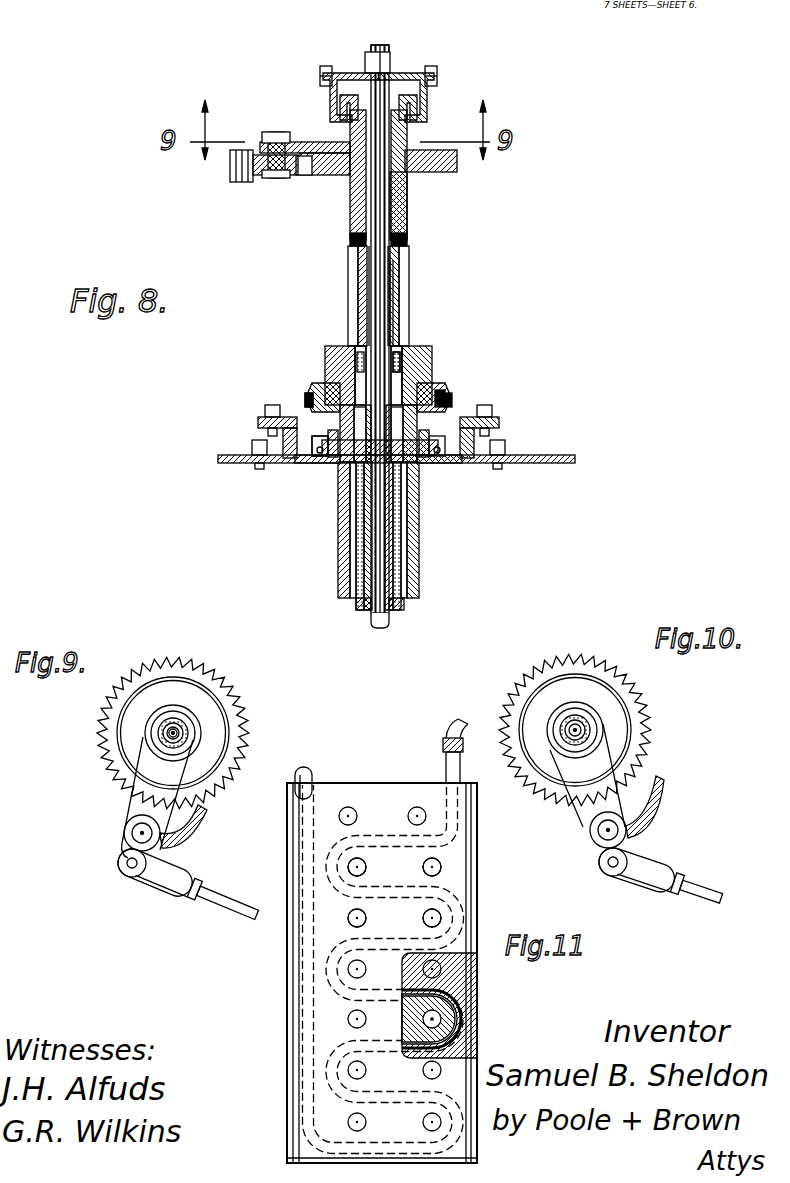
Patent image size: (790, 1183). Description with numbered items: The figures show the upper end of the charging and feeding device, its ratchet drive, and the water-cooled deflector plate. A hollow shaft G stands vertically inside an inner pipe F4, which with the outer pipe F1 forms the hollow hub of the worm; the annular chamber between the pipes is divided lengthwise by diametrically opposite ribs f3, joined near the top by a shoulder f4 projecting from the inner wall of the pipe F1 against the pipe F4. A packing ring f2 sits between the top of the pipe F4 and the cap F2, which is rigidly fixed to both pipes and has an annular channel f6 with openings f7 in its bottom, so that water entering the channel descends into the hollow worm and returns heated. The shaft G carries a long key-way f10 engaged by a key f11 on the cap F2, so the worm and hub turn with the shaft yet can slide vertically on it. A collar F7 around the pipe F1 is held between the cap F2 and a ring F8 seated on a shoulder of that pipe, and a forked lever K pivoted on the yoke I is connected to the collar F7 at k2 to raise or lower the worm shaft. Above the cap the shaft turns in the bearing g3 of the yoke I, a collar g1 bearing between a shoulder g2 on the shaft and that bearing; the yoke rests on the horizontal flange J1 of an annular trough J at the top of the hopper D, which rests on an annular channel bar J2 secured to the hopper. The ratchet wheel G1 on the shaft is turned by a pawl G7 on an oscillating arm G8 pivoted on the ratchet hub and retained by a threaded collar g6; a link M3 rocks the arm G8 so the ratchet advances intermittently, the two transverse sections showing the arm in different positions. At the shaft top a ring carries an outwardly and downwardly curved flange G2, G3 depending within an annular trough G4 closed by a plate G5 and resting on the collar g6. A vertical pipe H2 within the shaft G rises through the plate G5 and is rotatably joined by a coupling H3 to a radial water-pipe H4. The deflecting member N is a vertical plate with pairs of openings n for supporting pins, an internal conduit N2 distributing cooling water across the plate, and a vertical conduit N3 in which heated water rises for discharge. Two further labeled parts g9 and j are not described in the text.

In FIG. 8, the hopper D is at (228, 463).
In FIG. 8, the vertical pipe H2 is at (389, 262).
In FIG. 9, the vertical pipe H2 is at (168, 733).
In FIG. 8, the coupling H3 is at (368, 47).
In FIG. 8, the radially extending water-pipe H4 is at (386, 52).
In FIG. 8, the plate G5 is at (347, 75).
In FIG. 8, the curved flange G3 is at (340, 102).
In FIG. 8, the curved flange G2 is at (408, 102).
In FIG. 8, the annular trough G4 is at (350, 118).
In FIG. 8, the threaded collar g6 is at (408, 128).
In FIG. 8, the ratchet wheel G1 is at (450, 172).
In FIG. 9, the ratchet wheel G1 is at (236, 740).
In FIG. 10, the ratchet wheel G1 is at (645, 710).
In FIG. 8, the oscillating arm G8 is at (333, 163).
In FIG. 9, the oscillating arm G8 is at (157, 797).
In FIG. 10, the oscillating arm G8 is at (588, 786).
In FIG. 8, the pawl G7 is at (240, 182).
In FIG. 9, the pawl G7 is at (178, 842).
In FIG. 10, the pawl G7 is at (655, 812).
In FIG. 8, the clamp bolt g9 is at (340, 136).
In FIG. 8, the bearing g3 is at (407, 203).
In FIG. 8, the shoulder g2 is at (350, 240).
In FIG. 8, the collar g1 is at (407, 238).
In FIG. 8, the hollow shaft G is at (352, 272).
In FIG. 9, the hollow shaft G is at (178, 728).
In FIG. 10, the hollow shaft G is at (577, 725).
In FIG. 8, the yoke I is at (392, 282).
In FIG. 8, the key-way f10 is at (392, 290).
In FIG. 9, the key-way f10 is at (173, 730).
In FIG. 10, the key-way f10 is at (567, 725).
In FIG. 8, the key f11 is at (392, 340).
In FIG. 8, the openings f7 is at (346, 345).
In FIG. 8, the annular channel f6 is at (400, 348).
In FIG. 8, the packing ring f2 is at (415, 352).
In FIG. 8, the cap F2 is at (330, 352).
In FIG. 8, the collar F7 is at (435, 372).
In FIG. 8, the forked lever K is at (318, 385).
In FIG. 8, the pivot connection k2 is at (310, 398).
In FIG. 8, the shoulder f4 is at (445, 398).
In FIG. 8, the ring F8 is at (420, 422).
In FIG. 8, the annular channel bar J2 is at (258, 422).
In FIG. 8, the horizontal flange J1 is at (500, 422).
In FIG. 8, the annular trough J is at (295, 462).
In FIG. 8, the foot block j is at (318, 462).
In FIG. 8, the outer pipe F1 is at (338, 517).
In FIG. 8, the inner pipe F4 is at (400, 515).
In FIG. 8, the ribs f3 is at (350, 603).
In FIG. 9, the link M3 is at (234, 900).
In FIG. 10, the link M3 is at (700, 893).
In FIG. 11, the deflecting member N is at (375, 784).
In FIG. 11, the vertical conduit N3 is at (306, 778).
In FIG. 11, the openings n is at (423, 866).
In FIG. 11, the internal conduit N2 is at (460, 1020).